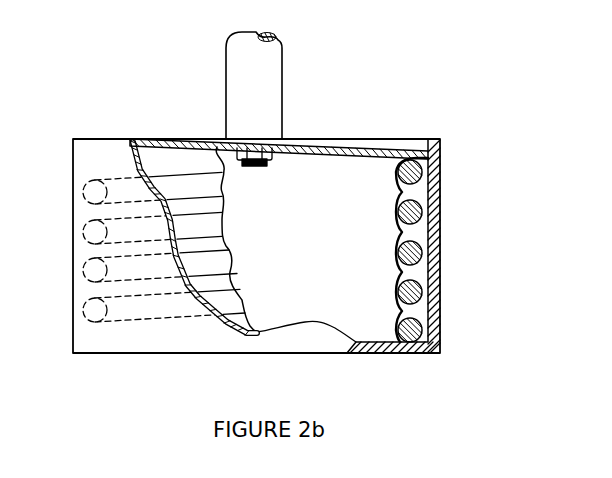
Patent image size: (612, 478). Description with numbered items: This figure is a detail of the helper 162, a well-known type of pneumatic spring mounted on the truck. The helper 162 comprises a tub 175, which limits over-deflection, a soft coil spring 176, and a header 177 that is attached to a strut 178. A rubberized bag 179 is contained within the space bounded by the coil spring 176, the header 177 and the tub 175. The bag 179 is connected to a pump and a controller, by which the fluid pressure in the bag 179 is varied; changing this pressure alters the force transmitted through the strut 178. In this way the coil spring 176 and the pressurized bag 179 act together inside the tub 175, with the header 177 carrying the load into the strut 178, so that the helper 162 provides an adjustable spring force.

The helper 162 is at (438, 160).
The tub 175 is at (438, 228).
The soft coil spring 176 is at (415, 200).
The header 177 is at (362, 141).
The strut 178 is at (270, 92).
The rubberized bag 179 is at (403, 271).